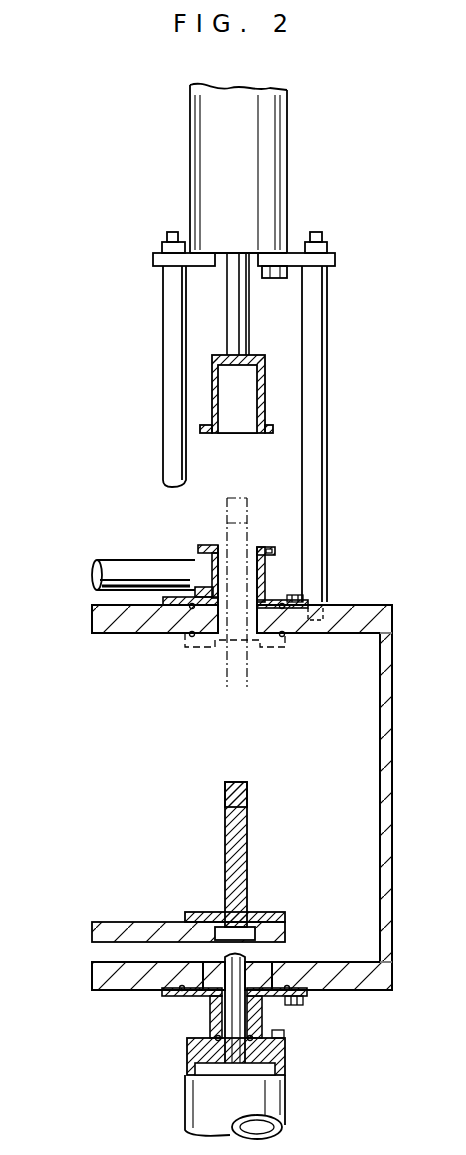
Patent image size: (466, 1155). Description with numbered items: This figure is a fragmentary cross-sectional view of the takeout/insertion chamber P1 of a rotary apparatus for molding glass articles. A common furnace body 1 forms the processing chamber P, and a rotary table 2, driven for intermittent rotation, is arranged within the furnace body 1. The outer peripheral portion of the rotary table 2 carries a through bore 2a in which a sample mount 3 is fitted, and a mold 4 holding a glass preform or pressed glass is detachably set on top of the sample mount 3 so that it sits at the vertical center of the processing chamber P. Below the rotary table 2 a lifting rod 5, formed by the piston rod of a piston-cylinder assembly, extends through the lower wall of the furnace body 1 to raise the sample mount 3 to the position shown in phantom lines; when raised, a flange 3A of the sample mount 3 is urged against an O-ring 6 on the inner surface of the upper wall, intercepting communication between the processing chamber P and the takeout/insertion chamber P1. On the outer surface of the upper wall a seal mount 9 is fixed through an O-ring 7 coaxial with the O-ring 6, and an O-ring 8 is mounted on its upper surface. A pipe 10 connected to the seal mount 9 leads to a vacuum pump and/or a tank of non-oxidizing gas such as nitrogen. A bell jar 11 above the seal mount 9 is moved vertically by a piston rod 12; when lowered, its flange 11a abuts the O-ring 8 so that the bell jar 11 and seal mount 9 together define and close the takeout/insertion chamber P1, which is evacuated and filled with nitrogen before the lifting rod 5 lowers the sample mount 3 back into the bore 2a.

The furnace body 1 is at (395, 762).
The rotary table 2 is at (196, 906).
The through bore 2a is at (243, 933).
The sample mount 3 is at (226, 854).
The flange 3A is at (203, 912).
The mold 4 is at (243, 800).
The lifting rod 5 is at (243, 973).
The O-ring 6 is at (281, 640).
The O-ring 7 is at (283, 612).
The O-ring 8 is at (268, 550).
The seal mount 9 is at (263, 582).
The pipe 10 is at (128, 573).
The bell jar 11 is at (253, 419).
The flange 11a is at (262, 436).
The piston rod 12 is at (251, 315).
The processing chamber P is at (156, 758).
The takeout/insertion chamber P1 is at (231, 423).